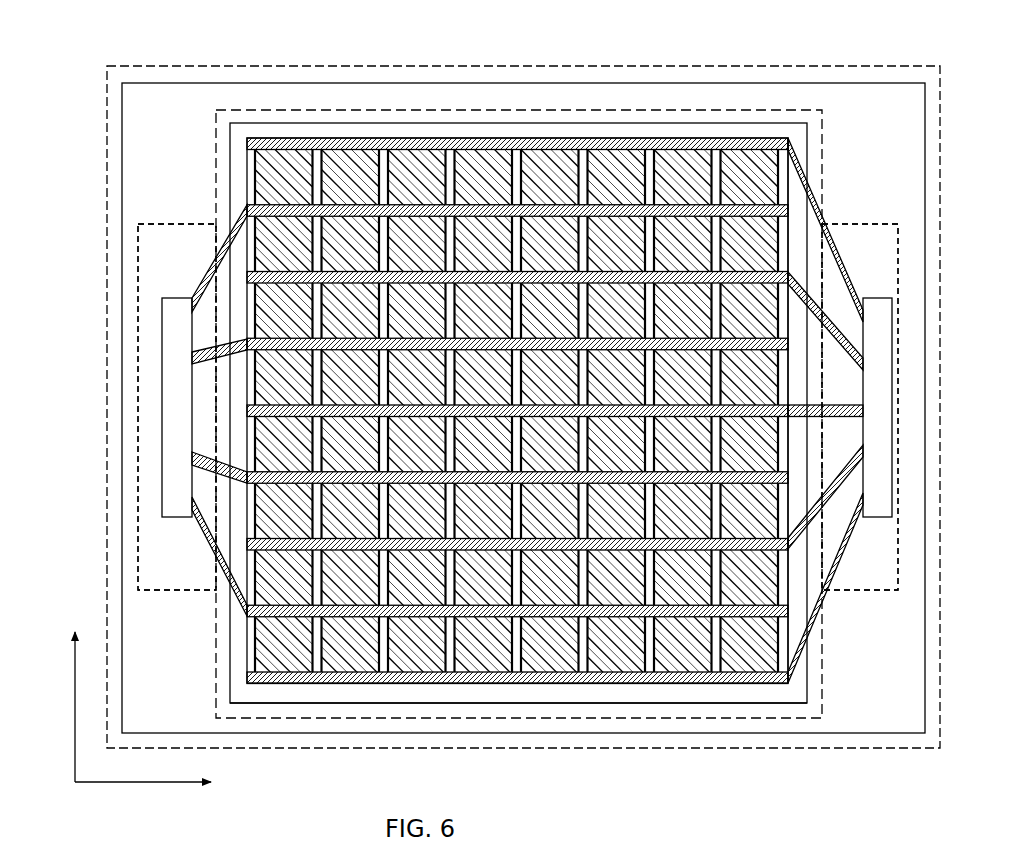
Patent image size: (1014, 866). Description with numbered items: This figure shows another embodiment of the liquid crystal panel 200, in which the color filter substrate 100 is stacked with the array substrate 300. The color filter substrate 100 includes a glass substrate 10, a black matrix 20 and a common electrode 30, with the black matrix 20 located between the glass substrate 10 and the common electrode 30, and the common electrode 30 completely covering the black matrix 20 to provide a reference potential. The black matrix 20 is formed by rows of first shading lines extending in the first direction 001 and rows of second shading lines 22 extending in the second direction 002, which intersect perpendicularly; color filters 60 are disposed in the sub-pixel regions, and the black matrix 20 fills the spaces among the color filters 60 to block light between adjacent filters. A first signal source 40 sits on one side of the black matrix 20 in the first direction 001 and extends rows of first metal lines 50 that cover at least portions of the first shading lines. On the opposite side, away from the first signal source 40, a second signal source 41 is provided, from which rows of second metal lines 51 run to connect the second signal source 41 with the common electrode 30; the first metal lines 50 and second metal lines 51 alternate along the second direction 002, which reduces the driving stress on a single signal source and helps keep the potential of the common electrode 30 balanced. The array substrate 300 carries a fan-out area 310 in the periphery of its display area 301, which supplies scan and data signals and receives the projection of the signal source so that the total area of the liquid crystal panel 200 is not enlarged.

The liquid crystal panel 200 is at (121, 41).
The color filter substrate 100 is at (120, 172).
The array substrate 300 is at (106, 212).
The glass substrate 10 is at (725, 102).
The display area 301 is at (288, 113).
The common electrode 30 is at (665, 690).
The fan-out area 310 is at (178, 243).
The black matrix 20 is at (573, 140).
The second shading lines 22 is at (785, 640).
The first metal lines 50 is at (318, 143).
The color filters 60 is at (403, 182).
The second metal lines 51 is at (790, 165).
The second signal source 41 is at (172, 502).
The first signal source 40 is at (876, 320).
The first direction 001 is at (166, 781).
The second direction 002 is at (71, 694).